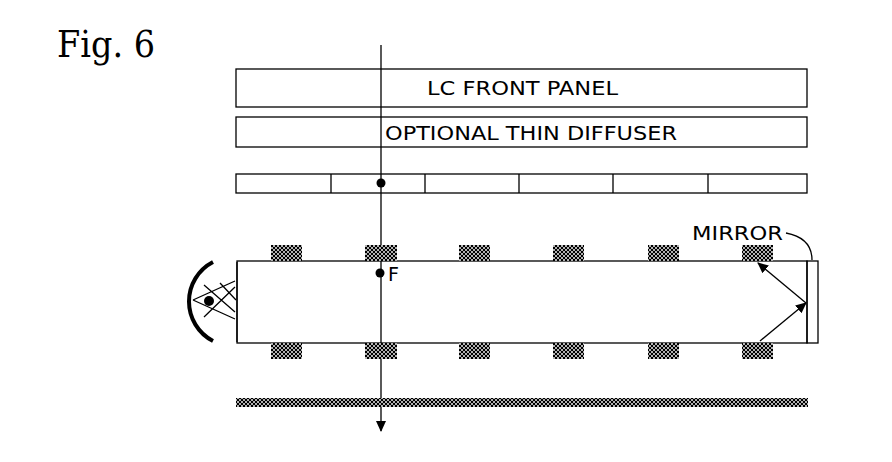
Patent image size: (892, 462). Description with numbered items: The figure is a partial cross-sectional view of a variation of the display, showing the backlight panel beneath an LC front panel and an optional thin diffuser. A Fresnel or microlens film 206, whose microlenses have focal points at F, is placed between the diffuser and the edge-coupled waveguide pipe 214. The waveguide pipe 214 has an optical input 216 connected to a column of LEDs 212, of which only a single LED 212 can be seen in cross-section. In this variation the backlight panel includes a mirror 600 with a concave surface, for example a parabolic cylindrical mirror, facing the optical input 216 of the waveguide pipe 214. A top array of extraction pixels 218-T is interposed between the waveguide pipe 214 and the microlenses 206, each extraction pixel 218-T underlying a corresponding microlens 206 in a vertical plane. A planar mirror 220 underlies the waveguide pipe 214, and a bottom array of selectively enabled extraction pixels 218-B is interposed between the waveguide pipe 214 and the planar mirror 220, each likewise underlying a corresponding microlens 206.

The microlens 206 is at (453, 178).
The edge-coupled waveguide pipe 214 is at (471, 311).
The top array of extraction pixels 218-T is at (272, 251).
The bottom array of extraction pixels 218-B is at (284, 361).
The mirror with a concave surface 600 is at (197, 323).
The light emitting diode 212 is at (212, 294).
The optical input 216 is at (234, 335).
The planar mirror 220 is at (455, 408).